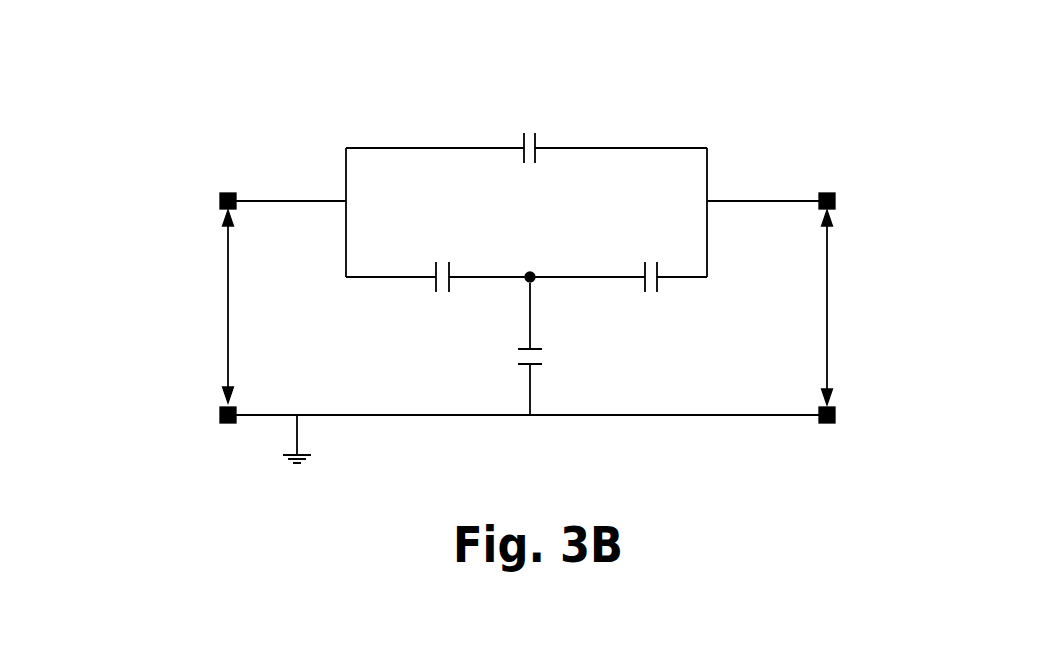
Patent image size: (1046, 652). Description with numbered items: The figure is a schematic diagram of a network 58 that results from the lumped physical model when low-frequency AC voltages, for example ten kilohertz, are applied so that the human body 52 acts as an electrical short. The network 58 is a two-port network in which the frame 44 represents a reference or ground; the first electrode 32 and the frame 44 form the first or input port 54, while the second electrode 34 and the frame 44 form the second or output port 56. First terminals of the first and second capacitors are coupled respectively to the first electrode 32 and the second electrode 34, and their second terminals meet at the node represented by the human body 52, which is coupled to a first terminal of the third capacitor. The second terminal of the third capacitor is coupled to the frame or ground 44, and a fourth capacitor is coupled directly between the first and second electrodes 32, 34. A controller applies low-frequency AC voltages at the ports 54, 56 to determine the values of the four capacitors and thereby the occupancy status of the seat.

The first electrode 32 is at (220, 199).
The second electrode 34 is at (836, 203).
The frame 44 is at (370, 416).
The human body 52 is at (530, 276).
The first or input port 54 is at (136, 318).
The second or output port 56 is at (880, 314).
The network 58 is at (770, 120).